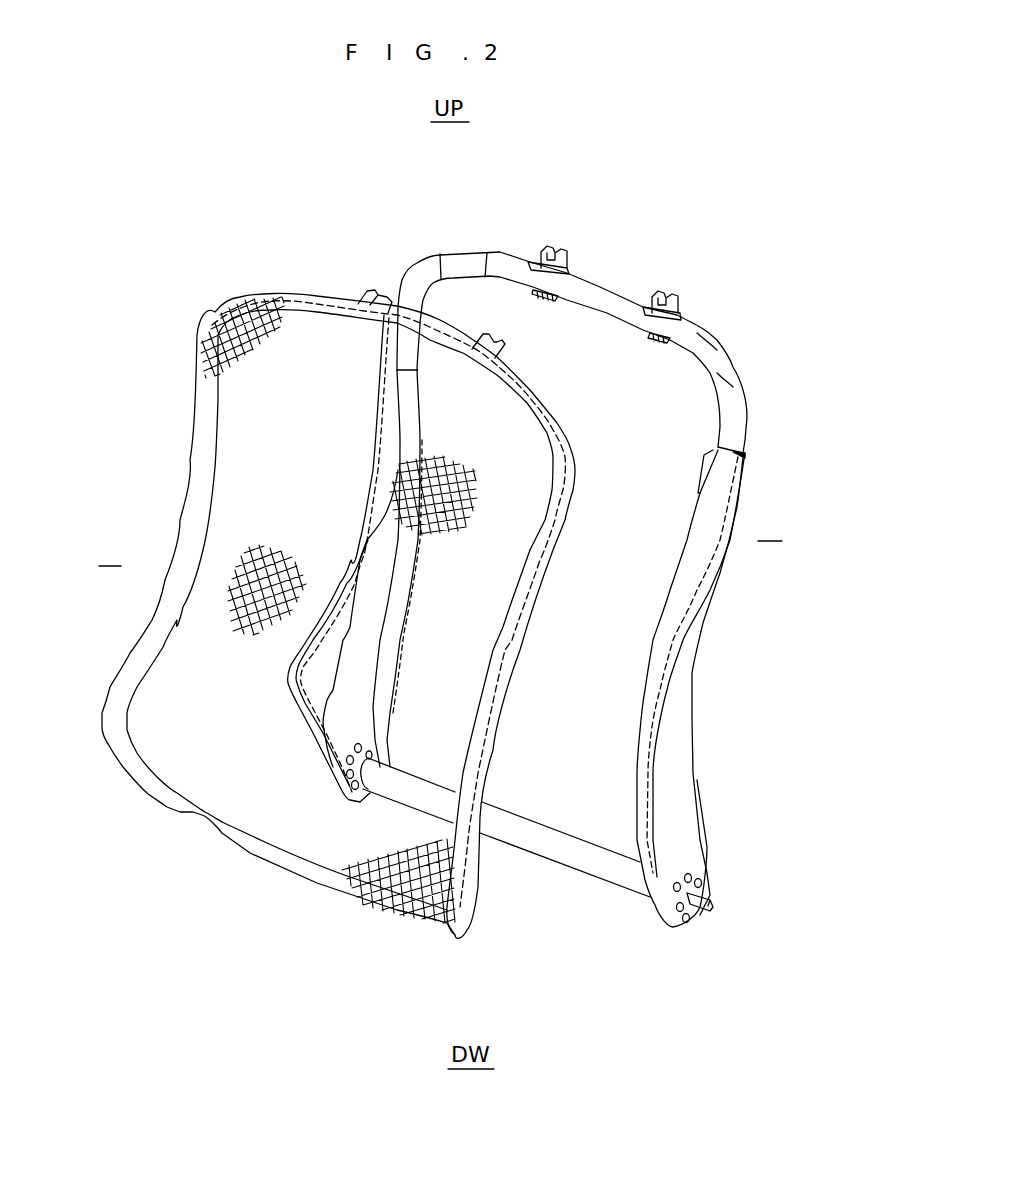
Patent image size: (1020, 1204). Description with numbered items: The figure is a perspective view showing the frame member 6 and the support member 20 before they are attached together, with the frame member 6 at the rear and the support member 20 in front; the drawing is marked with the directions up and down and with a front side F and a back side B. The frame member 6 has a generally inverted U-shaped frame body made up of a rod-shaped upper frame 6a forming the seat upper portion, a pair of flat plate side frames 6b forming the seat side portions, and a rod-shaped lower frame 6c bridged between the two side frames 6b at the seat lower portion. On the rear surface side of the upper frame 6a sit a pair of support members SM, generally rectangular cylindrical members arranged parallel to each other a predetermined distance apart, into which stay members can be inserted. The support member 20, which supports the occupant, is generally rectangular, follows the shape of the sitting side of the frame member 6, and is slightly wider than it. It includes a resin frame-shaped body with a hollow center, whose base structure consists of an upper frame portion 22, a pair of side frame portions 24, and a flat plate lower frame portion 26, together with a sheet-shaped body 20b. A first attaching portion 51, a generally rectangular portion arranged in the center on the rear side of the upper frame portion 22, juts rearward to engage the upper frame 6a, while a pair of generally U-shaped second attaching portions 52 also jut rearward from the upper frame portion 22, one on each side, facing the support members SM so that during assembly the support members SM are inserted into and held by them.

The support member 20 is at (207, 303).
The upper frame portion 22 is at (307, 297).
The side frame portions 24 is at (183, 575).
The lower frame portion 26 is at (270, 852).
The sheet-shaped body 20b is at (172, 757).
The first attaching portion 51 is at (437, 320).
The second attaching portions 52 is at (370, 290).
The seat back frame 6 is at (645, 244).
The upper frame 6a is at (727, 313).
The side frames 6b is at (380, 452).
The lower frame 6c is at (568, 847).
The support members SM is at (568, 254).
The front F is at (110, 553).
The back B is at (770, 528).